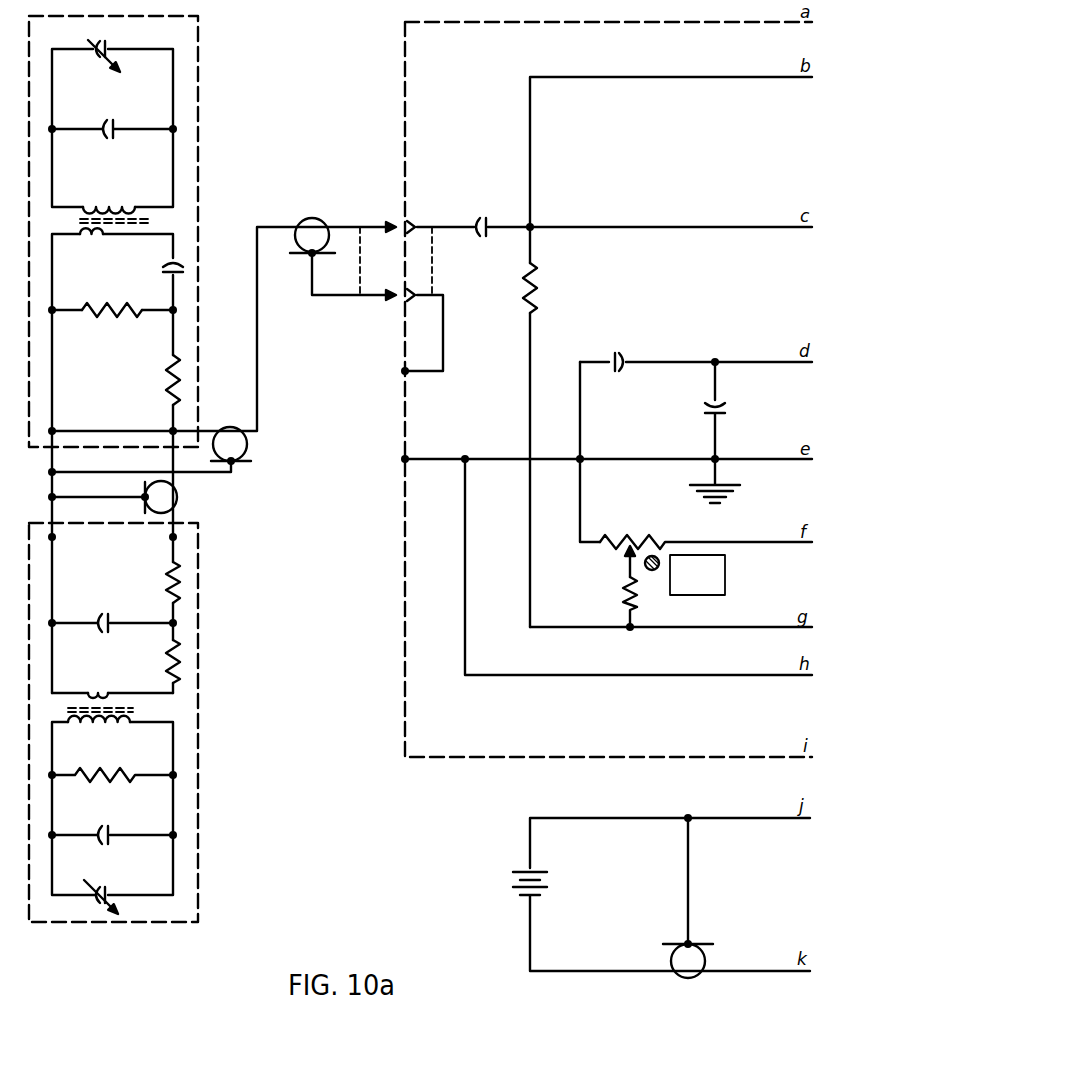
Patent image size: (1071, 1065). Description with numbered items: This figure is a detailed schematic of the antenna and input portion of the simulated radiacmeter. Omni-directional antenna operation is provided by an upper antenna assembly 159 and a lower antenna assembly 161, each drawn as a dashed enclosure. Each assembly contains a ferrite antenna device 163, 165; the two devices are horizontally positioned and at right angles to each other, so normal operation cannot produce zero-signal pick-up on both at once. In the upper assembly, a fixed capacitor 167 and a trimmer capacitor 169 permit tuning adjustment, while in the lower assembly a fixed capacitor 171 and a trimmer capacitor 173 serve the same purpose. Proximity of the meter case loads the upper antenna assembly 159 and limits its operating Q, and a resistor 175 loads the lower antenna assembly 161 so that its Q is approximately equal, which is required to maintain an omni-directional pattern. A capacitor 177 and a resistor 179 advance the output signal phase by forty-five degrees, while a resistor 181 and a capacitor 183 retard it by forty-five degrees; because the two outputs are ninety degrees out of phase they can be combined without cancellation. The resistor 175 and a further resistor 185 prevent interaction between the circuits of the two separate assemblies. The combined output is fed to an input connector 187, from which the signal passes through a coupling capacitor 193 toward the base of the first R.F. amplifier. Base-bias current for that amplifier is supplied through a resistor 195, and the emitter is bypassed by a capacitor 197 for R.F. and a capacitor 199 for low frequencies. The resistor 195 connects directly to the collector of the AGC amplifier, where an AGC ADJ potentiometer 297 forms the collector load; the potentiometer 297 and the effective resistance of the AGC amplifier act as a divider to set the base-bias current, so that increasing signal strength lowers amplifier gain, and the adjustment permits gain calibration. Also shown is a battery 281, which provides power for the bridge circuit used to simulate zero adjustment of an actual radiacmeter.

The upper antenna assembly 159 is at (199, 129).
The lower antenna assembly 161 is at (199, 890).
The ferrite antenna device 163 is at (110, 207).
The ferrite antenna device 165 is at (105, 723).
The fixed capacitor 167 is at (115, 140).
The trimmer capacitor 169 is at (106, 44).
The fixed capacitor 171 is at (100, 833).
The trimmer capacitor 173 is at (107, 890).
The resistor 175 is at (181, 380).
The capacitor 177 is at (185, 272).
The resistor 179 is at (117, 314).
The resistor 181 is at (166, 672).
The capacitor 183 is at (111, 633).
The resistor 185 is at (165, 582).
The input connector 187 is at (421, 225).
The coupling capacitor 193 is at (484, 223).
The resistor 195 is at (538, 288).
The capacitor 197 is at (626, 356).
The capacitor 199 is at (711, 403).
The battery 281 is at (547, 887).
The AGC ADJ potentiometer 297 is at (623, 588).